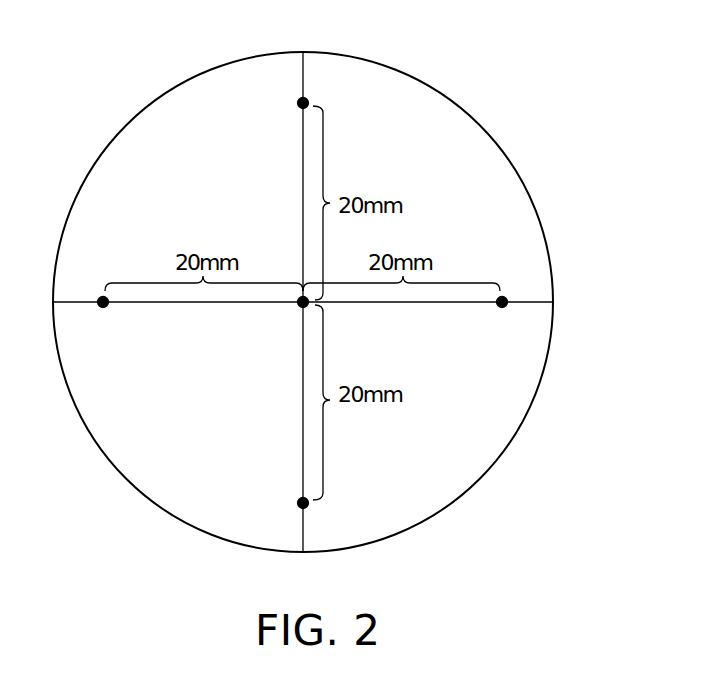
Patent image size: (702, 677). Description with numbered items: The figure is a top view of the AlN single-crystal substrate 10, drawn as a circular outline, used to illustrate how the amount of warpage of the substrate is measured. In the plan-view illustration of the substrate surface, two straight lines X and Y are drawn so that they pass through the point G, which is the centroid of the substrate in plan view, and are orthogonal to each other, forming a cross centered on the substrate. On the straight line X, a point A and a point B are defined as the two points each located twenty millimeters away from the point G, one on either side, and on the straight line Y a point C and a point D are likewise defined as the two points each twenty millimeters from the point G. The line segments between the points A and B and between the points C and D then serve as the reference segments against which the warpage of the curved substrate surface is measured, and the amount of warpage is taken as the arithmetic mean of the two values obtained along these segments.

The AlN single-crystal substrate 10 is at (517, 167).
The straight line X is at (92, 303).
The straight line Y is at (303, 78).
The point A is at (97, 289).
The point B is at (511, 289).
The point C is at (312, 93).
The point D is at (313, 516).
The point G is at (382, 318).